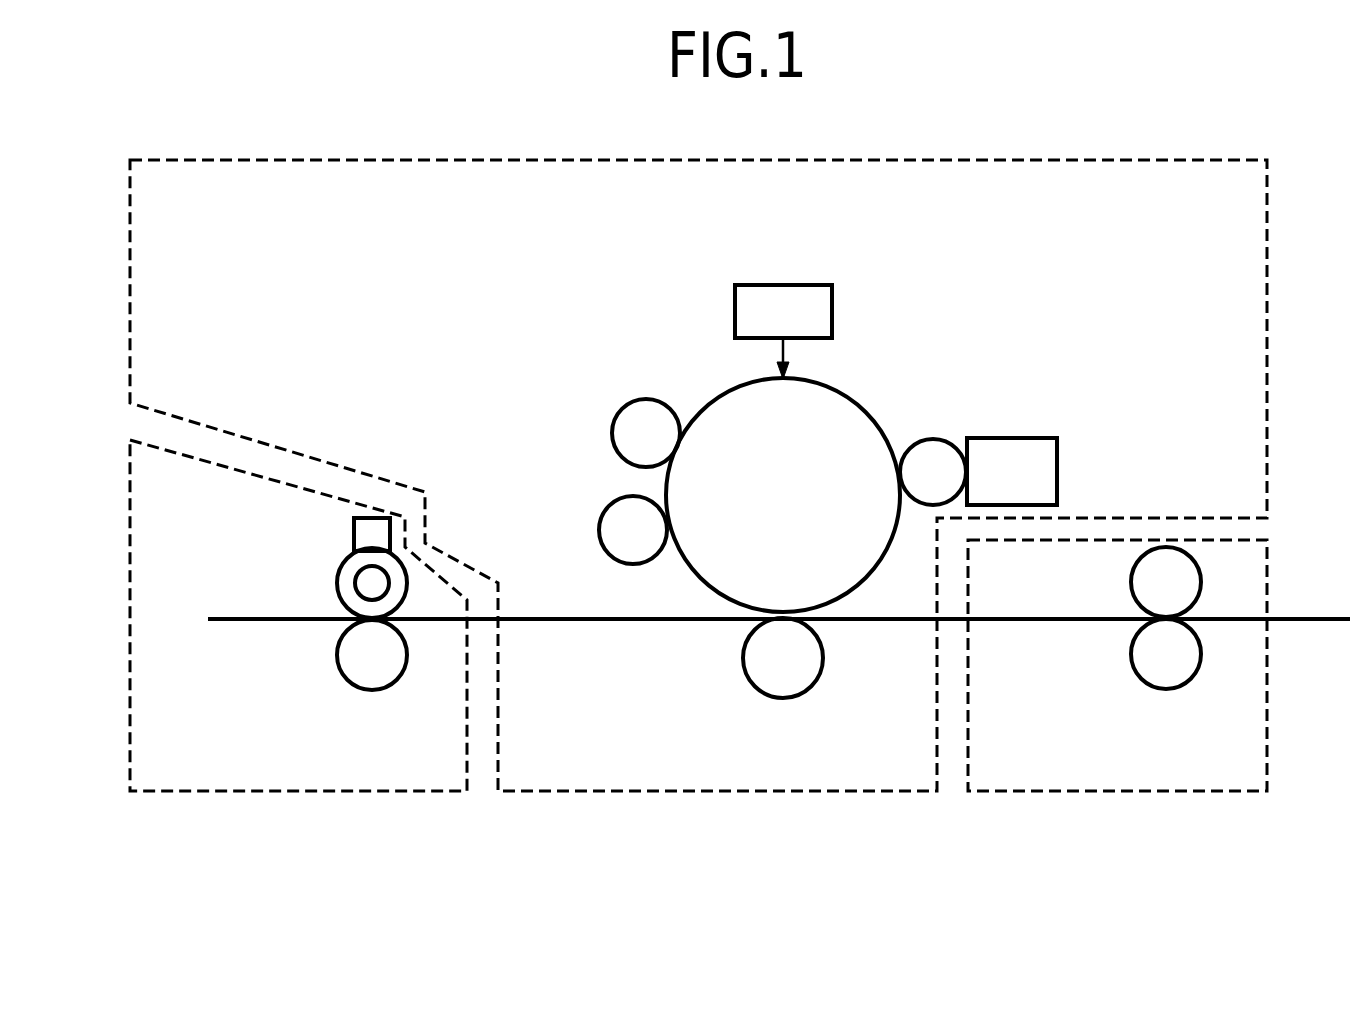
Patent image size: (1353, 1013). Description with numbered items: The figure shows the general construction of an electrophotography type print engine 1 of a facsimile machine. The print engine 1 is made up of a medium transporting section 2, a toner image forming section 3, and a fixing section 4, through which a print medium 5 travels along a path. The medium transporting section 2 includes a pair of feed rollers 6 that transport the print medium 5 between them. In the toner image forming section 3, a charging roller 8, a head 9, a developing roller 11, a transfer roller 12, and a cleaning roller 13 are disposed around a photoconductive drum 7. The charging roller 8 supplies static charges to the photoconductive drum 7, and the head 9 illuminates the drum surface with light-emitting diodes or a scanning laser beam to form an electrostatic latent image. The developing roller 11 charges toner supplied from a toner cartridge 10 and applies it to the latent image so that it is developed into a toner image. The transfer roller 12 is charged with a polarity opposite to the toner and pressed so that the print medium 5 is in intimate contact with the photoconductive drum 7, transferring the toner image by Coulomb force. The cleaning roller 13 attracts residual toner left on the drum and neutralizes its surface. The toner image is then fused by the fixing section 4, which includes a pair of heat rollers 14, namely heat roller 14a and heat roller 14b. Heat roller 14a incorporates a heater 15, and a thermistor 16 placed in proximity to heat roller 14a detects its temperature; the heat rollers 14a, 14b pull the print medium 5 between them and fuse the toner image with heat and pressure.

The print engine 1 is at (983, 142).
The medium transporting section 2 is at (1153, 780).
The toner image forming section 3 is at (1135, 157).
The fixing section 4 is at (358, 795).
The print medium 5 is at (1290, 620).
The feed rollers 6 is at (1152, 592).
The photoconductive drum 7 is at (845, 410).
The charging roller 8 is at (628, 428).
The head 9 is at (745, 310).
The toner cartridge 10 is at (1040, 473).
The developing roller 11 is at (928, 448).
The transfer roller 12 is at (755, 658).
The cleaning roller 13 is at (617, 522).
The heat rollers 14 is at (226, 630).
The heat roller 14a is at (340, 600).
The heat roller 14b is at (353, 657).
The heater 15 is at (370, 583).
The thermistor 16 is at (370, 537).